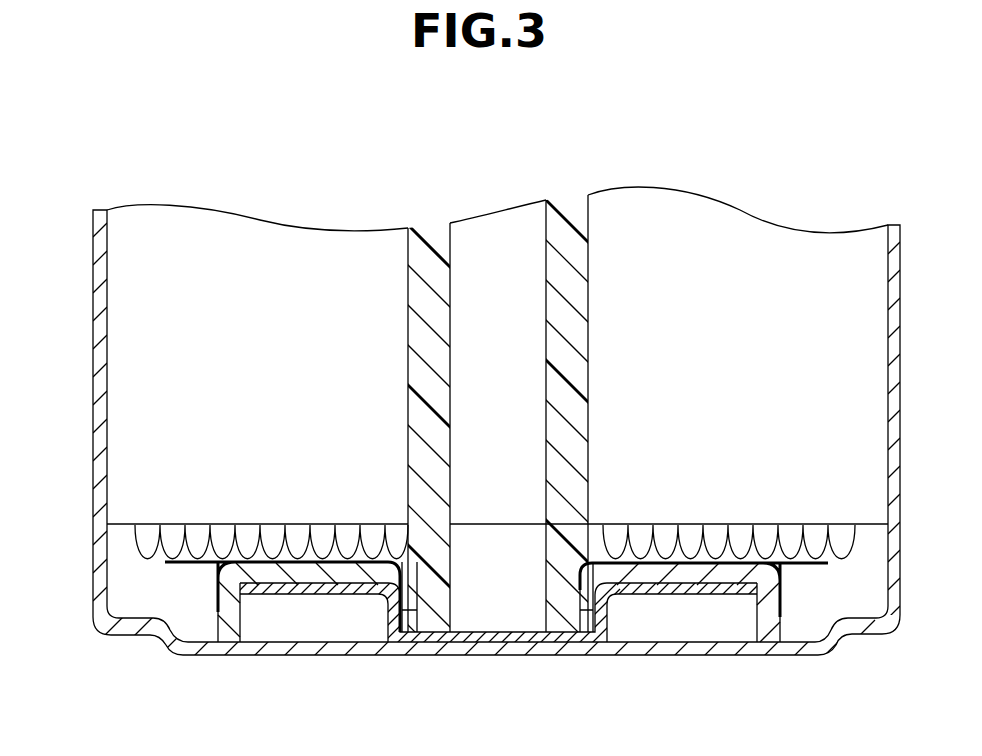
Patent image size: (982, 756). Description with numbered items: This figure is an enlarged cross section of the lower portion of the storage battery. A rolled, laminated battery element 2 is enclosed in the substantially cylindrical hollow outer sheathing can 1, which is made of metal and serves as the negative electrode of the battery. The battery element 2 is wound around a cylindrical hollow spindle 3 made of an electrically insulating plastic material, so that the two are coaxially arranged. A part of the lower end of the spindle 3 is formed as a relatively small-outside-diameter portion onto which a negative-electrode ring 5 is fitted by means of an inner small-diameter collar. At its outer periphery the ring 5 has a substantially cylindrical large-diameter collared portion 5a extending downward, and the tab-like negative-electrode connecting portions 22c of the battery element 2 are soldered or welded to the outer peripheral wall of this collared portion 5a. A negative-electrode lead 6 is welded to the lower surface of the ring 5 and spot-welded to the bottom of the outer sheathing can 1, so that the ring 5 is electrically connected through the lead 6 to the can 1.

The outer sheathing can 1 is at (93, 332).
The rolled, laminated battery element 2 is at (247, 250).
The cylindrical hollow spindle 3 is at (563, 205).
The negative-electrode connecting portions 22c is at (820, 566).
The negative-electrode ring 5 is at (405, 637).
The large-diameter collared portion 5a is at (240, 607).
The negative-electrode lead 6 is at (387, 608).